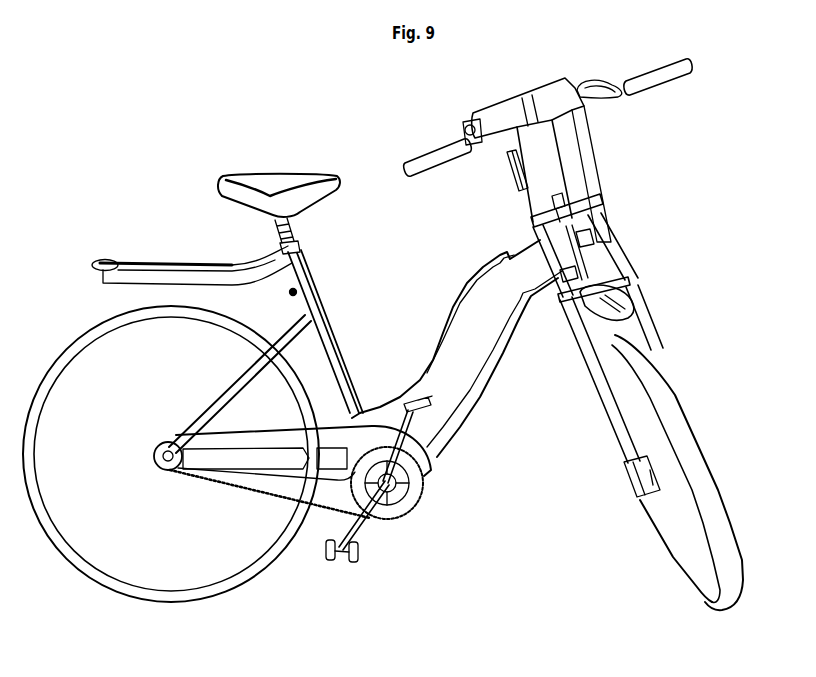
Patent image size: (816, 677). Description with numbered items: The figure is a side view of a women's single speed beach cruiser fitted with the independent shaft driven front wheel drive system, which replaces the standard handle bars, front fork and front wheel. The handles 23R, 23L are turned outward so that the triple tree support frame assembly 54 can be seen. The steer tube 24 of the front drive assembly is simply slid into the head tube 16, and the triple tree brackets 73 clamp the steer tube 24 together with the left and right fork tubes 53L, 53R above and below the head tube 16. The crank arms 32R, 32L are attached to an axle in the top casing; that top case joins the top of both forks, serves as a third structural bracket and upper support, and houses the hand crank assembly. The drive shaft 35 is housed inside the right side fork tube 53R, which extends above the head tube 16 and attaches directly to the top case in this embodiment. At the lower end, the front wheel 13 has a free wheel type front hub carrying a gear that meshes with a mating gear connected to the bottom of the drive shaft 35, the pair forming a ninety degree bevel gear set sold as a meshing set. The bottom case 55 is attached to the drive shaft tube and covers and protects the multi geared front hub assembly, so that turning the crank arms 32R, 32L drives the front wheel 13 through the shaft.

The front wheel 13 is at (680, 410).
The head tube 16 is at (577, 242).
The left handle 23L is at (663, 77).
The right handle 23R is at (411, 180).
The steer tube 24 is at (556, 196).
The left crank arm 32L is at (583, 85).
The right crank arm 32R is at (463, 121).
The drive shaft 35 is at (507, 170).
The left fork tube 53L is at (645, 330).
The right fork tube 53R is at (583, 339).
The triple tree support frame assembly 54 is at (487, 104).
The bottom case 55 is at (633, 470).
The triple tree brackets 73 is at (628, 276).